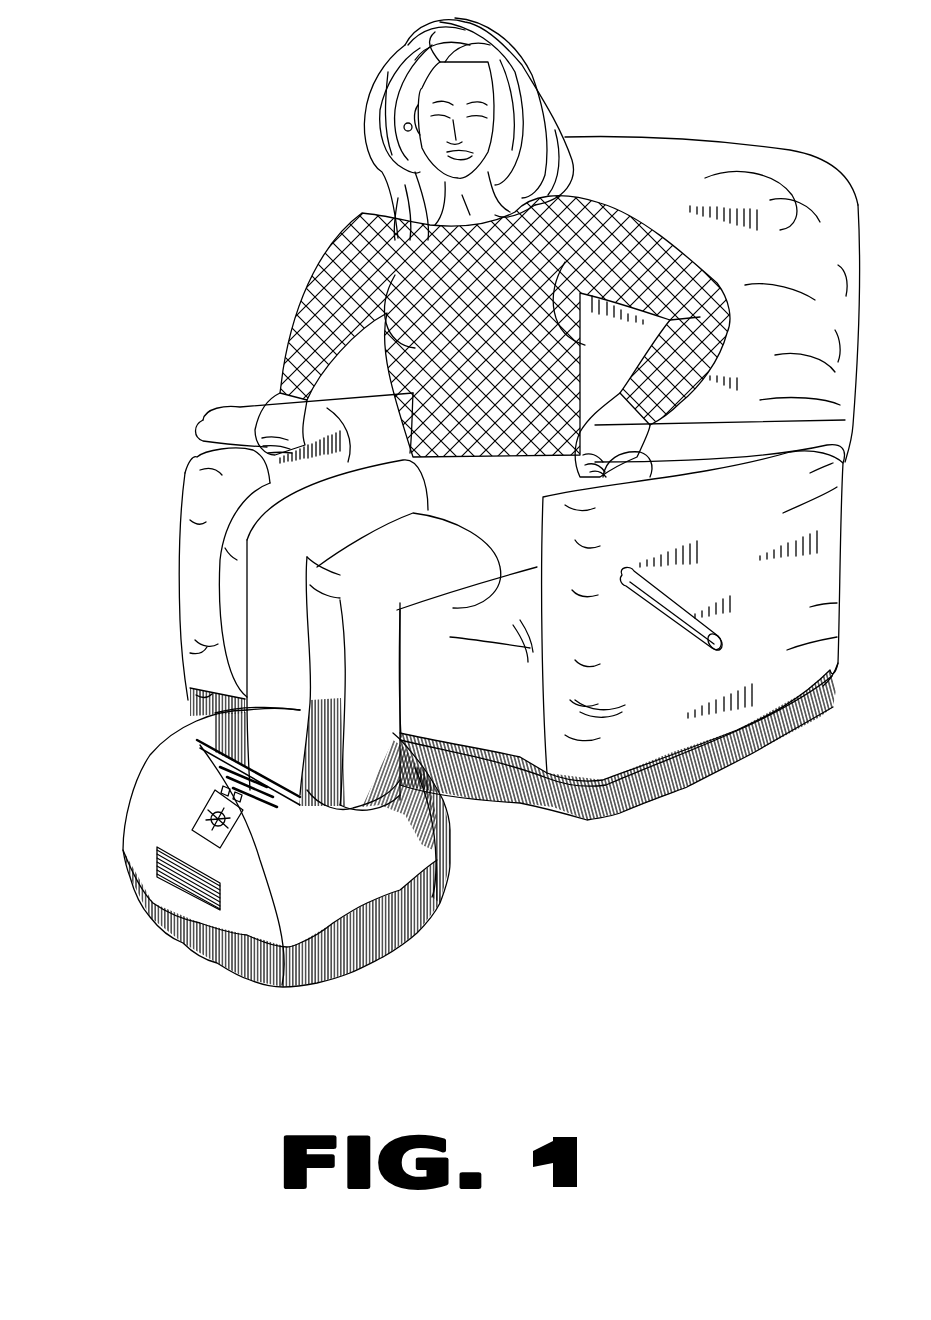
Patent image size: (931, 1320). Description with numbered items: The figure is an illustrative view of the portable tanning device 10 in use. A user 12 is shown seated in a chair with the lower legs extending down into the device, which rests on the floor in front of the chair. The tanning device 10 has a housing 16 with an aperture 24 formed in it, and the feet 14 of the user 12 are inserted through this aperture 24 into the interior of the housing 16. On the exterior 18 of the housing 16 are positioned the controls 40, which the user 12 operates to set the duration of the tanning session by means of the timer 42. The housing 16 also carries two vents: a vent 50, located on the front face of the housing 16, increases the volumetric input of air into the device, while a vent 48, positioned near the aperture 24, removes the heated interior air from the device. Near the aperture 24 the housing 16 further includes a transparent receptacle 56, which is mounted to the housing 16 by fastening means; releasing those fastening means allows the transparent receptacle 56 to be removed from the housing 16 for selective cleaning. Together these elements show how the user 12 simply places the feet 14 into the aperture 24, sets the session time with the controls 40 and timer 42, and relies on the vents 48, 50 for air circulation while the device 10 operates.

The portable tanning device 10 is at (147, 428).
The user 12 is at (362, 213).
The feet 14 is at (447, 843).
The housing 16 is at (186, 708).
The exterior 18 is at (170, 757).
The aperture 24 is at (307, 790).
The controls 40 is at (182, 822).
The timer 42 is at (284, 905).
The vent 48 is at (197, 740).
The vent 50 is at (185, 880).
The transparent receptacle 56 is at (322, 720).